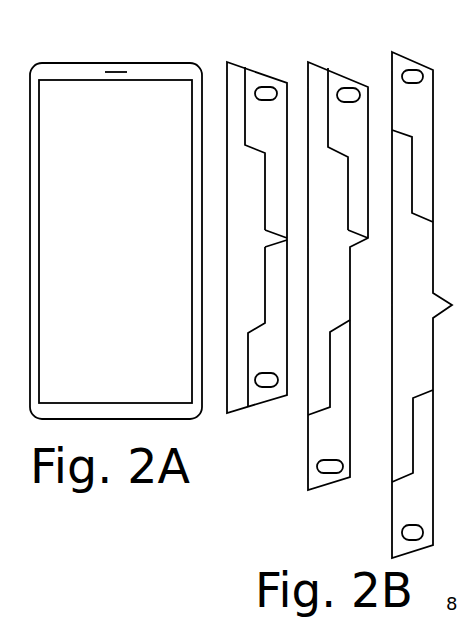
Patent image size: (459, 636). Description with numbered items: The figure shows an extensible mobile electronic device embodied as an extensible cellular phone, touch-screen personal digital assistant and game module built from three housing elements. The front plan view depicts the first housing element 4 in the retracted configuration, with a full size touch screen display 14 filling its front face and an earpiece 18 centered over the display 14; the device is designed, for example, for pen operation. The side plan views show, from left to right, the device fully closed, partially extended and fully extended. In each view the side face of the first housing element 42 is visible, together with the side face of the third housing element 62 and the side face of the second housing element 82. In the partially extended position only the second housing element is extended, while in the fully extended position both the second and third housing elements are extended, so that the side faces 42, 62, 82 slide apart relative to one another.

In FIG. 2A, the first housing element 4 is at (70, 72).
In FIG. 2A, the touch screen display 14 is at (115, 241).
In FIG. 2A, the earpiece 18 is at (113, 72).
In FIG. 2B, the side face of first housing element 42 is at (339, 305).
In FIG. 2B, the side face of third housing element 62 is at (339, 148).
In FIG. 2B, the side face of second housing element 82 is at (340, 393).